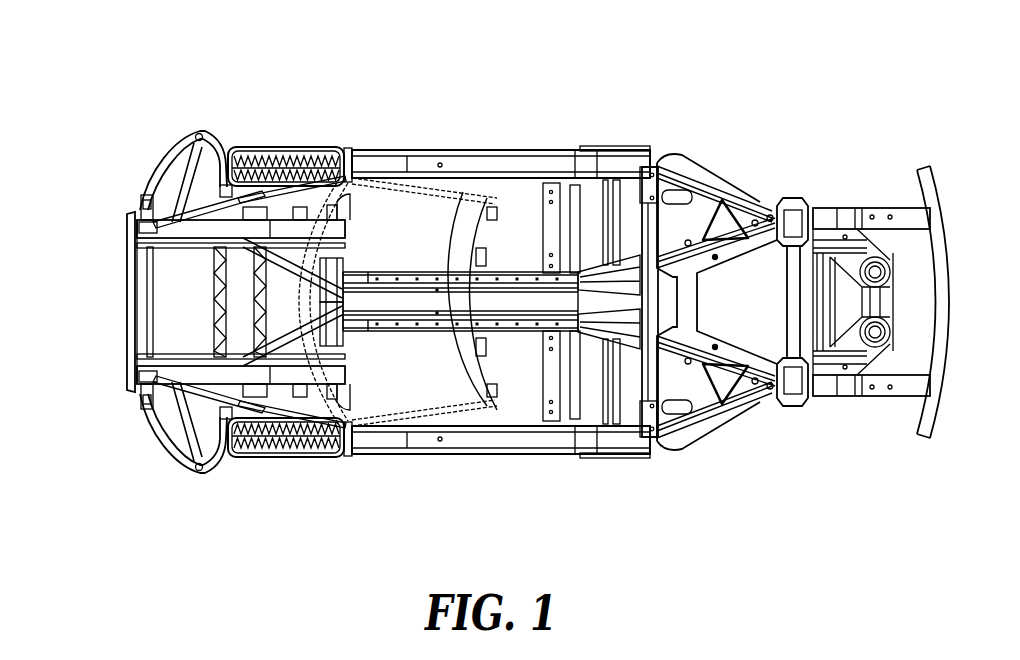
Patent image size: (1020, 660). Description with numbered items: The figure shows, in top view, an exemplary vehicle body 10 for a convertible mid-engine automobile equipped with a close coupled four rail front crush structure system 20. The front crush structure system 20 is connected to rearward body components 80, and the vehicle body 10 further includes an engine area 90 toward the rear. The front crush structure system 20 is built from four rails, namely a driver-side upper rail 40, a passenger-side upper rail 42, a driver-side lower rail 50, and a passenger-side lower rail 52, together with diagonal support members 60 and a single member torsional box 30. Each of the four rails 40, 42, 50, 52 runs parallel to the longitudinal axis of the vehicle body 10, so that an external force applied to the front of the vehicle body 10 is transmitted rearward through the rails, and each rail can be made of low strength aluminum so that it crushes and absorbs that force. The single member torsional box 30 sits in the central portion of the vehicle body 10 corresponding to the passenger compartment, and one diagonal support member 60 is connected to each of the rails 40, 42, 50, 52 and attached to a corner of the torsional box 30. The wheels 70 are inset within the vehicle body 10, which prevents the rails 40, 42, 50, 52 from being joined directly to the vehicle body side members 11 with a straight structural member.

The vehicle body 10 is at (220, 90).
The vehicle body side members 11 is at (447, 152).
The front crush structure system 20 is at (330, 327).
The single member torsional box 30 is at (503, 300).
The driver-side upper rail 40 is at (183, 375).
The passenger-side upper rail 42 is at (180, 235).
The driver-side lower rail 50 is at (186, 362).
The passenger-side lower rail 52 is at (186, 243).
The diagonal support members 60 is at (340, 368).
The wheels 70 is at (288, 147).
The rearward body components 80 is at (650, 385).
The engine area 90 is at (713, 300).